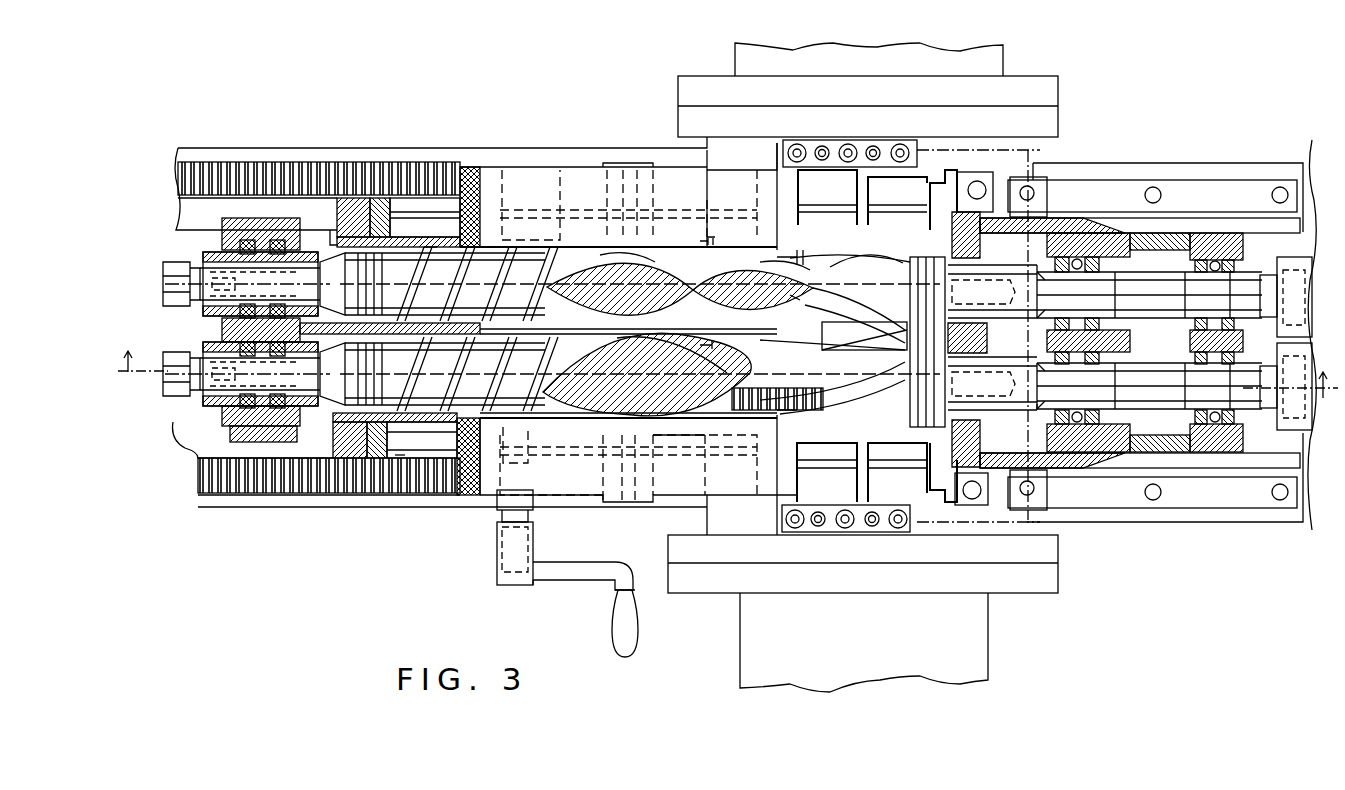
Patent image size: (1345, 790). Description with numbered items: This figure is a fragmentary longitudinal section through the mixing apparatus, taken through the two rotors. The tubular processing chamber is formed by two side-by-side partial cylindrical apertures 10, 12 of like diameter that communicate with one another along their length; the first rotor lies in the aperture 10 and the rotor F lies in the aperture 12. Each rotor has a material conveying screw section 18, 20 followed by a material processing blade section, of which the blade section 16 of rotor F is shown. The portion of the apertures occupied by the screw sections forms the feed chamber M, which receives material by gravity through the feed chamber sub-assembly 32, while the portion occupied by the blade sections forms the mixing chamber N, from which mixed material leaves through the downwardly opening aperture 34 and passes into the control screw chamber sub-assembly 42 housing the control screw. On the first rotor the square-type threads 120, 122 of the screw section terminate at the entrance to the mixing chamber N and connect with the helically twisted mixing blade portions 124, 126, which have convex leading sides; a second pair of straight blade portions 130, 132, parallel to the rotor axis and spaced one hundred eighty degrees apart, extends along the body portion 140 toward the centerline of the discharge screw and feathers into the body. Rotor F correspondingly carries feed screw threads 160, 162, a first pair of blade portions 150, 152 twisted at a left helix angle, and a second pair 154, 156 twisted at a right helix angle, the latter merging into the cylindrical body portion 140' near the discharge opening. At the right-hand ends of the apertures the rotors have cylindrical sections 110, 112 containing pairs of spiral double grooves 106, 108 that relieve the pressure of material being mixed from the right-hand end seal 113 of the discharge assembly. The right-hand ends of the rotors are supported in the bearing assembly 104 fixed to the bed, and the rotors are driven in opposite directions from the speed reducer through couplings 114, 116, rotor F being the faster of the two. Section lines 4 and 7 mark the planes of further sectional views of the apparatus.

The section line 4- 4 is at (728, 371).
The section line 7- 7 is at (701, 293).
The partial cylindrical aperture 10 is at (538, 418).
The partial cylindrical aperture 12 is at (590, 249).
The material processing blade section 16 is at (572, 318).
The material conveying screw section 18 is at (425, 426).
The material conveying screw section 20 is at (448, 240).
The feed chamber sub-assembly 32 is at (406, 457).
The discharge aperture 34 is at (870, 258).
The control screw chamber sub-assembly 42 is at (992, 650).
The bearing assembly 104 is at (1046, 218).
The spiral double grooves 106 is at (950, 384).
The spiral double grooves 108 is at (950, 294).
The cylindrical section 110 is at (925, 430).
The cylindrical section 112 is at (922, 255).
The right-hand end seal 113 is at (985, 252).
The coupling 114 is at (1290, 437).
The coupling 116 is at (1288, 262).
The thread 120 is at (535, 360).
The thread 122 is at (500, 360).
The mixing blade portion 124 is at (590, 388).
The mixing blade portion 126 is at (645, 345).
The mixing blade portion 130 is at (768, 362).
The mixing blade portion 132 is at (812, 358).
The body portion 140 is at (628, 412).
The cylindrical body portion 140' is at (800, 249).
The mixing blade portion 150 is at (634, 300).
The mixing blade portion 152 is at (652, 265).
The mixing blade portion 154 is at (736, 296).
The mixing blade portion 156 is at (752, 270).
The feed screw thread 160 is at (515, 283).
The feed screw thread 162 is at (475, 283).
The rotor F is at (792, 298).
The feed chamber M is at (449, 428).
The mixing chamber N is at (675, 418).